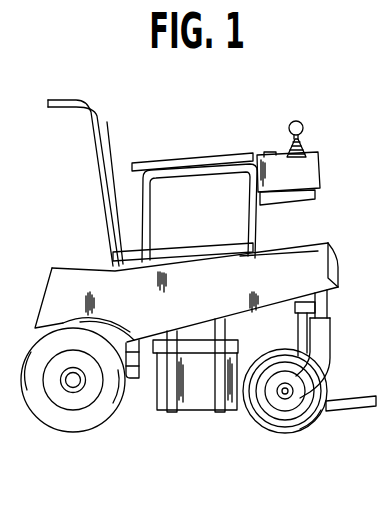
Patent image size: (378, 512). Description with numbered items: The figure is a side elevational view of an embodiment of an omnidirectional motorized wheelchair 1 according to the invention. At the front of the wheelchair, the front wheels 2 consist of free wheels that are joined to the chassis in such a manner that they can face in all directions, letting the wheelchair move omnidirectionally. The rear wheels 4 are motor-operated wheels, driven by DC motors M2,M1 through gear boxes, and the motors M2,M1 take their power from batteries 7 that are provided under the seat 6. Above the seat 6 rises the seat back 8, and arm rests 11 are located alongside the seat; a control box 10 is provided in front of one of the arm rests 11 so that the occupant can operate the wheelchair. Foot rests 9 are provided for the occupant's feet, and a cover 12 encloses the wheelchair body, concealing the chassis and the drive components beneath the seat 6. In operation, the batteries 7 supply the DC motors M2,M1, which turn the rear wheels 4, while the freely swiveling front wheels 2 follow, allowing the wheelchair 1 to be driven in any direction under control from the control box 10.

The wheelchair 1 is at (318, 140).
The front wheels 2 is at (324, 378).
The rear wheels 4 is at (88, 420).
The seat 6 is at (304, 246).
The batteries 7 is at (202, 393).
The seat back 8 is at (103, 150).
The foot rests 9 is at (332, 410).
The control box 10 is at (284, 163).
The arm rests 11 is at (192, 158).
The cover for a wheelchair body 12 is at (97, 278).
The DC motors M2,M1 is at (127, 372).